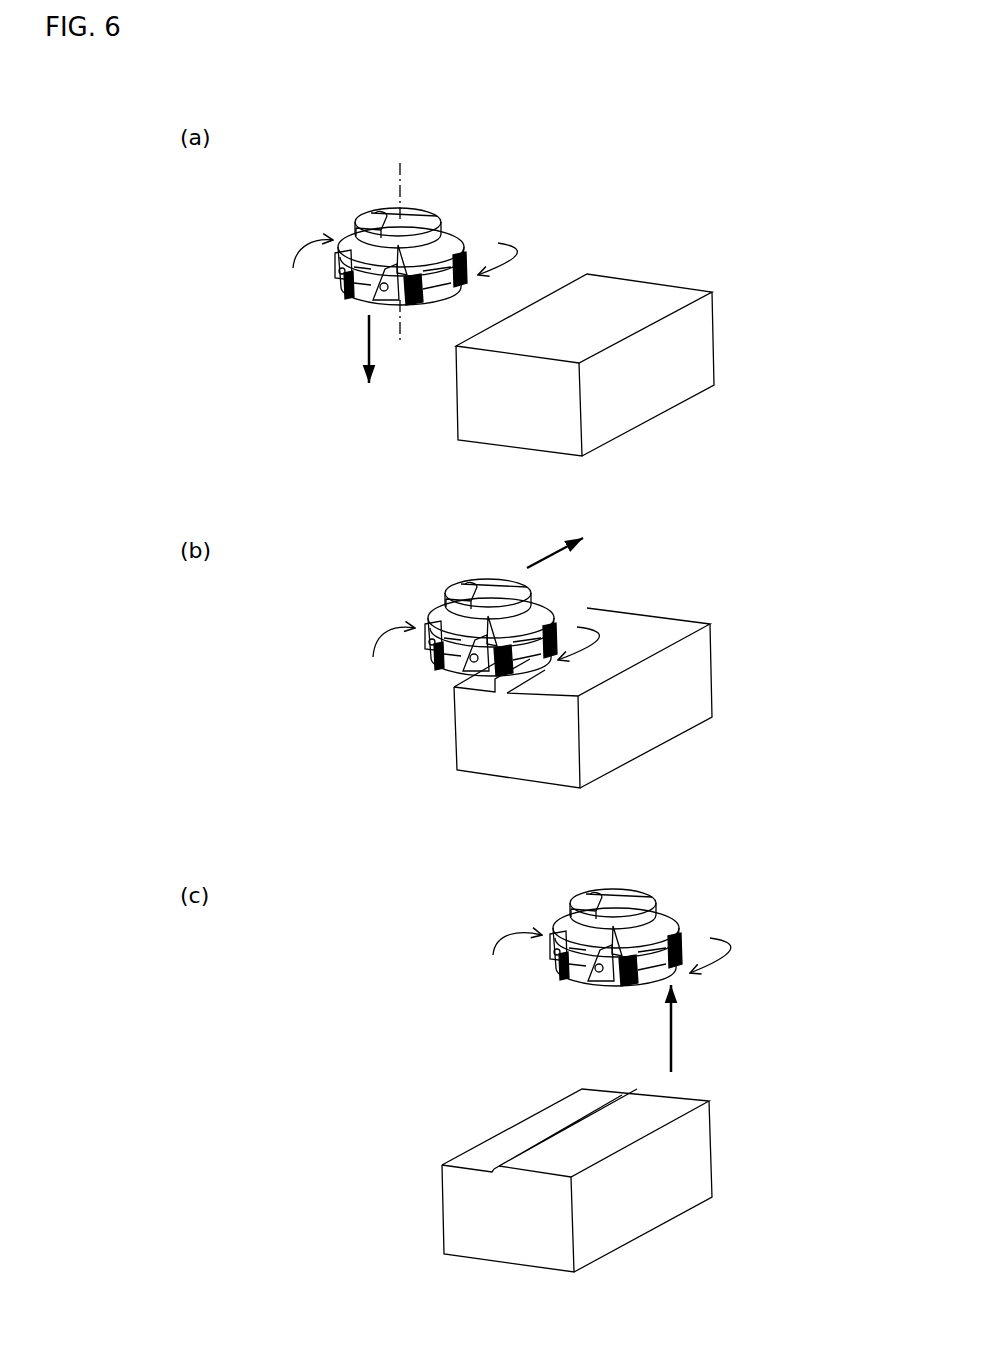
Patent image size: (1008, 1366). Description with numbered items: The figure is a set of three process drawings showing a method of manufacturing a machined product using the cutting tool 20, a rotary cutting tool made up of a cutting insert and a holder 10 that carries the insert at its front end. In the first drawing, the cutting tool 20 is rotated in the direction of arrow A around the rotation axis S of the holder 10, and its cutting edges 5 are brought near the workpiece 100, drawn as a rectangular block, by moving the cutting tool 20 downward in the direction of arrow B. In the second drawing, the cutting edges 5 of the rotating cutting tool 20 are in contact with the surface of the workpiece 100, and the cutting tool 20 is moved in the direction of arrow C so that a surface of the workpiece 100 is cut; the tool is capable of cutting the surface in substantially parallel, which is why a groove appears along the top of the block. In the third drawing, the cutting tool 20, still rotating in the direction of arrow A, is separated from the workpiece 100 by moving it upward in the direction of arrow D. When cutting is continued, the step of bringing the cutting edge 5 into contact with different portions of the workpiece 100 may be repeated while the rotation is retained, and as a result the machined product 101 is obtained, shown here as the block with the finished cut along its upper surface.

The cutting edge 5 is at (412, 302).
The holder 10 is at (368, 222).
The cutting tool 20 is at (452, 213).
The workpiece 100 is at (679, 358).
The machined product 101 is at (565, 1129).
The rotation axis S is at (403, 172).
The arrow A is at (512, 604).
The arrow B is at (369, 351).
The arrow C is at (555, 548).
The arrow D is at (671, 1040).